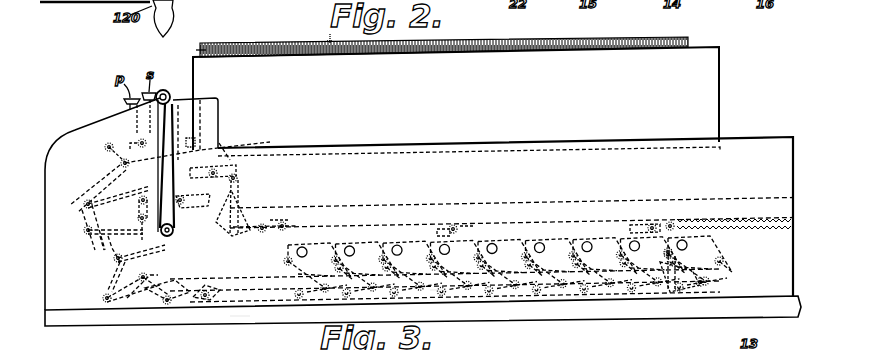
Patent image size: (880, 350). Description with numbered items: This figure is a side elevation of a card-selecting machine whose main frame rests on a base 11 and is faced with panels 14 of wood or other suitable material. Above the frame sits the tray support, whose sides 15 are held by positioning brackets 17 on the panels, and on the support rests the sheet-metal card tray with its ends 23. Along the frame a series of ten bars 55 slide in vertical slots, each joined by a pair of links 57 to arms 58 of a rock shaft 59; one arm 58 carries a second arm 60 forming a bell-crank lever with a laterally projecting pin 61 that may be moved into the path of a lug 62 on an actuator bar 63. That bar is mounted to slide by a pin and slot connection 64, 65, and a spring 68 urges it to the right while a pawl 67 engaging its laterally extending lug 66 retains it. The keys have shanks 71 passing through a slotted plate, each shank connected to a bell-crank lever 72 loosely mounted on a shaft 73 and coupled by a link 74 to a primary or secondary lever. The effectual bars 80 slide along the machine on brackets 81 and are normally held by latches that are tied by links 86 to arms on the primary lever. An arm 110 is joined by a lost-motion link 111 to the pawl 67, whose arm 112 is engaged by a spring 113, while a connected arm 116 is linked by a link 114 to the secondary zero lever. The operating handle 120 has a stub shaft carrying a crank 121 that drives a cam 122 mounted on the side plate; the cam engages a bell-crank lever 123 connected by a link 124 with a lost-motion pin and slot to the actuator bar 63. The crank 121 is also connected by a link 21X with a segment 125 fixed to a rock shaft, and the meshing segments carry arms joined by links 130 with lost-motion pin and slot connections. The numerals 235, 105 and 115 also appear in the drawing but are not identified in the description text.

The base 11 is at (240, 316).
The panels 14 is at (764, 142).
The sides of the tray support 15 is at (710, 61).
The positioning brackets 17 is at (188, 157).
The ends of the tray 23 is at (200, 55).
The type bar 235 is at (330, 34).
The bars 55 is at (373, 273).
The links 57 is at (580, 297).
The arms 58 is at (488, 297).
The rock shaft 59 is at (704, 283).
The second arm 60 is at (692, 270).
The laterally projecting pin 61 is at (672, 253).
The lug 62 is at (678, 223).
The actuator bar 63 is at (578, 219).
The pin 64 is at (453, 225).
The slot 65 is at (468, 227).
The laterally extending lug 66 is at (233, 227).
The pawl 67 is at (280, 220).
The spring 68 is at (735, 220).
The key shanks 71 is at (126, 102).
The bell-crank lever 72 is at (140, 139).
The shaft 73 is at (105, 146).
The link 74 is at (118, 166).
The effectual bars 80 is at (437, 290).
The brackets 81 is at (167, 304).
The links 86 is at (110, 248).
The plate 105 is at (219, 143).
The arm 110 is at (217, 173).
The link 111 is at (233, 190).
The arm 112 is at (197, 200).
The spring 113 is at (237, 178).
The link 114 is at (129, 163).
The link 115 is at (88, 202).
The connected arm 116 is at (195, 142).
The operating handle 120 is at (167, 113).
The crank 121 is at (139, 217).
The cam 122 is at (143, 280).
The bell-crank lever 123 is at (193, 299).
The link 124 is at (280, 213).
The segment 125 is at (127, 298).
The links 130 is at (114, 259).
The link 21X is at (86, 231).